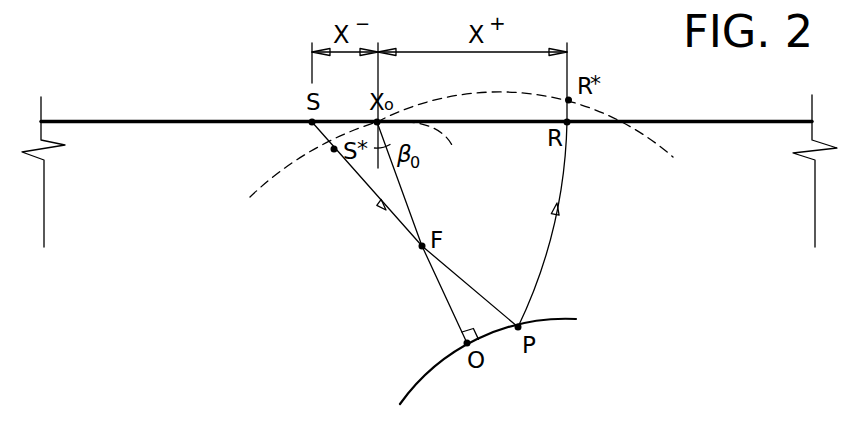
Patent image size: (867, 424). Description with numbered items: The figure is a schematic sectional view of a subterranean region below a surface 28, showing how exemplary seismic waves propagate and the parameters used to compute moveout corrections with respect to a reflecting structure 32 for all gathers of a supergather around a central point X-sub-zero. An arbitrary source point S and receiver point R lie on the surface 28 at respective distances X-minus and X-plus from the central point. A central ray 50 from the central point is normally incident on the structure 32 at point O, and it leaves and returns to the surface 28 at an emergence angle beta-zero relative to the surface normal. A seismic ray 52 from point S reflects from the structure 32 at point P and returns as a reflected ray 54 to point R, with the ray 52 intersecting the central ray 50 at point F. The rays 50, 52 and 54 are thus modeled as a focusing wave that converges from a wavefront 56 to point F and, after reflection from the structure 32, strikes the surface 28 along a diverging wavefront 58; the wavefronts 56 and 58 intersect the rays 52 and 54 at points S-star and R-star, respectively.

The surface 28 is at (263, 121).
The structure 32 is at (423, 373).
The central ray 50 is at (402, 190).
The seismic ray 52 is at (416, 246).
The reflected ray 54 is at (542, 270).
The wavefront 56 is at (328, 163).
The diverging wavefront 58 is at (623, 126).